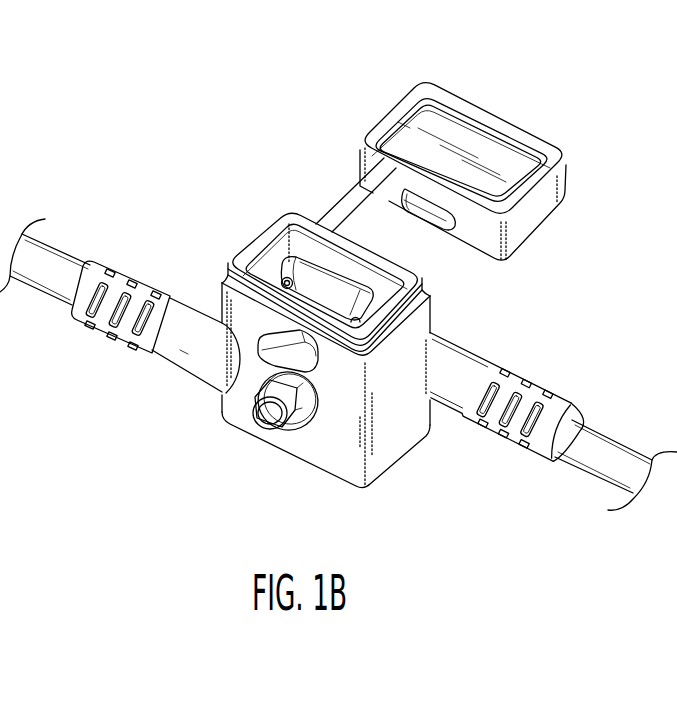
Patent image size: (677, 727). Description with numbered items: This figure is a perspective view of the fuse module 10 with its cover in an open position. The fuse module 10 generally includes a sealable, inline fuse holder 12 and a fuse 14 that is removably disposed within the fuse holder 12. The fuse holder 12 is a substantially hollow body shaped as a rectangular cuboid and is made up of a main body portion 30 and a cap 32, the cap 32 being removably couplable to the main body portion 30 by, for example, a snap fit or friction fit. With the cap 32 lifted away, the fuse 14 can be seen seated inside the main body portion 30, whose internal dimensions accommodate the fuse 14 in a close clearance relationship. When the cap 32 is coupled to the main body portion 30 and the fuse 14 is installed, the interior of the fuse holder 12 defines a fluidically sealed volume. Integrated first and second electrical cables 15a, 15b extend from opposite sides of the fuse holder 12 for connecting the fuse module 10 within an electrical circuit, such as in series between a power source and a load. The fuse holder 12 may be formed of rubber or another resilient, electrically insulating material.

The fuse module 10 is at (243, 143).
The fuse holder 12 is at (248, 429).
The fuse 14 is at (300, 278).
The first electrical cable 15a is at (592, 457).
The second electrical cable 15b is at (43, 253).
The main body portion 30 is at (332, 452).
The cap 32 is at (495, 130).